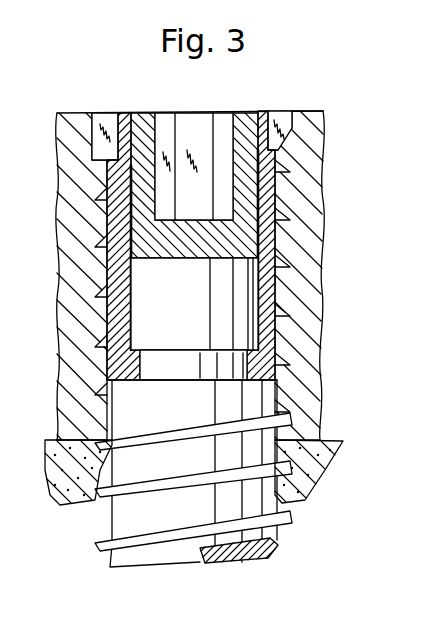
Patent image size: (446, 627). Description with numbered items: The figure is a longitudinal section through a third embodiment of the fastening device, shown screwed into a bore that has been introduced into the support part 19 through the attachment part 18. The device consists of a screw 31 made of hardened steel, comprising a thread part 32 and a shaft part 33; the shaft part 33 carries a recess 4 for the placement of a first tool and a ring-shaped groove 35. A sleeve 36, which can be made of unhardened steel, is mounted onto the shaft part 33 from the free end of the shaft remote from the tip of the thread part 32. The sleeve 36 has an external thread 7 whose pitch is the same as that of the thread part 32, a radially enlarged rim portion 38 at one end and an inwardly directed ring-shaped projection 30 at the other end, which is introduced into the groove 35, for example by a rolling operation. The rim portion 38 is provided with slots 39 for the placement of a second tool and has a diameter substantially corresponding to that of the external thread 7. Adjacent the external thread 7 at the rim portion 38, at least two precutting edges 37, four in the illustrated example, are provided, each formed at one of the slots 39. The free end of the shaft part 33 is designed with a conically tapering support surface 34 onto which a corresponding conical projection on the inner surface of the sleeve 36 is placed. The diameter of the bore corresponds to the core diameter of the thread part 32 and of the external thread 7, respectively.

The recess 4 is at (195, 122).
The external thread 7 is at (278, 318).
The attachment part 18 is at (306, 346).
The support part 19 is at (297, 467).
The ring-shaped projection 30 is at (187, 357).
The screw 31 is at (100, 562).
The thread part 32 is at (122, 518).
The shaft part 33 is at (112, 251).
The support surface 34 is at (140, 130).
The ring-shaped groove 35 is at (143, 280).
The sleeve 36 is at (282, 243).
The precutting edges 37 is at (278, 155).
The rim portion 38 is at (297, 120).
The slots 39 is at (285, 115).